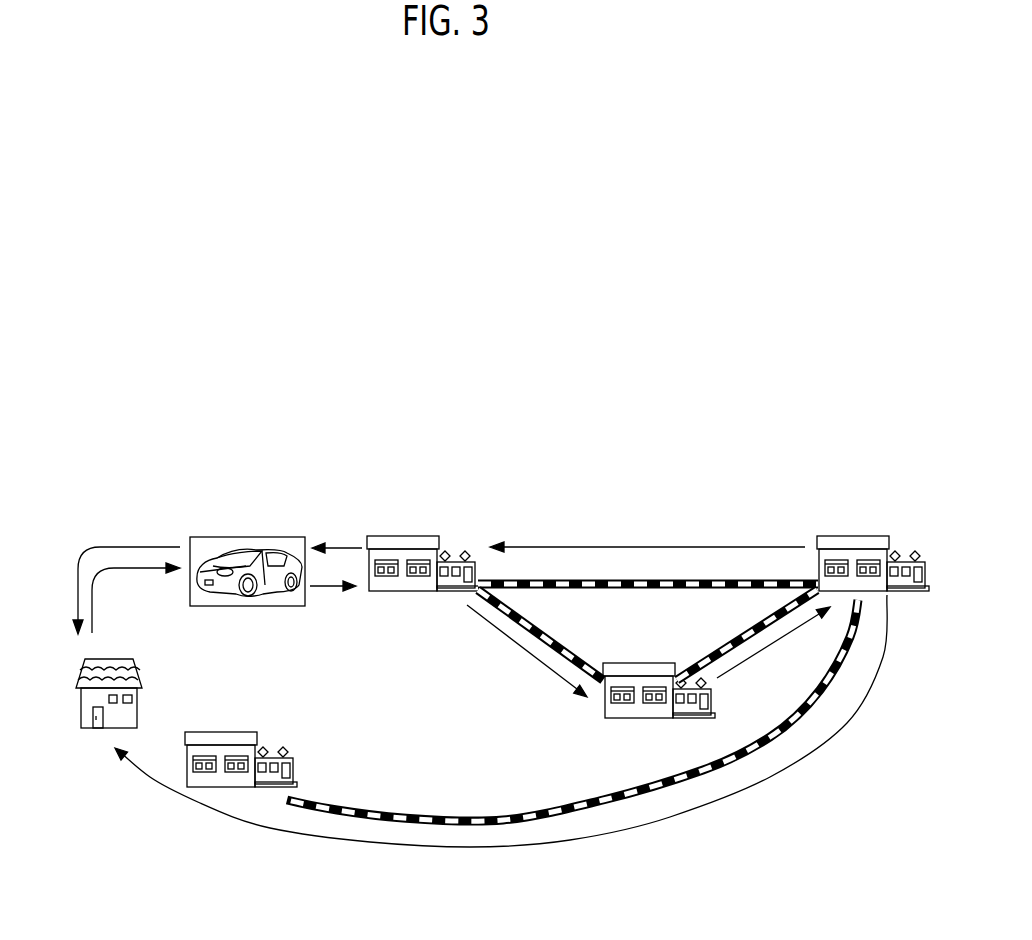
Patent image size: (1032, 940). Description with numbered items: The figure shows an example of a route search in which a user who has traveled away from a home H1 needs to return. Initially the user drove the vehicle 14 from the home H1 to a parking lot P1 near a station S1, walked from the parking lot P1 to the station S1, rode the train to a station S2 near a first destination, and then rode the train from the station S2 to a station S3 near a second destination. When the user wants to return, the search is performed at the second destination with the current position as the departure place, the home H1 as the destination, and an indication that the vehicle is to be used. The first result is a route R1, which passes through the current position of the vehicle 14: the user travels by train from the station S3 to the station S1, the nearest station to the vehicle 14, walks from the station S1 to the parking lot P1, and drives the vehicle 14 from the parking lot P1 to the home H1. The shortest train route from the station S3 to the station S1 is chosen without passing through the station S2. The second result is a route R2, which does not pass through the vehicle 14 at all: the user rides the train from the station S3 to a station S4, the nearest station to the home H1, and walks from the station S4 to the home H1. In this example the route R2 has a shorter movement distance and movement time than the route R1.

The vehicle 14 is at (234, 553).
The parking lot P1 is at (288, 607).
The route R1 is at (128, 546).
The route R2 is at (482, 848).
The station S1 is at (400, 593).
The station S2 is at (640, 719).
The station S3 is at (855, 538).
The station S4 is at (218, 732).
The home H1 is at (90, 702).